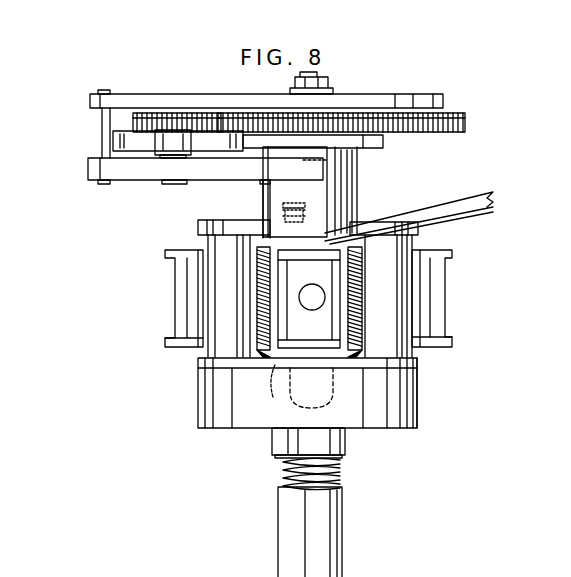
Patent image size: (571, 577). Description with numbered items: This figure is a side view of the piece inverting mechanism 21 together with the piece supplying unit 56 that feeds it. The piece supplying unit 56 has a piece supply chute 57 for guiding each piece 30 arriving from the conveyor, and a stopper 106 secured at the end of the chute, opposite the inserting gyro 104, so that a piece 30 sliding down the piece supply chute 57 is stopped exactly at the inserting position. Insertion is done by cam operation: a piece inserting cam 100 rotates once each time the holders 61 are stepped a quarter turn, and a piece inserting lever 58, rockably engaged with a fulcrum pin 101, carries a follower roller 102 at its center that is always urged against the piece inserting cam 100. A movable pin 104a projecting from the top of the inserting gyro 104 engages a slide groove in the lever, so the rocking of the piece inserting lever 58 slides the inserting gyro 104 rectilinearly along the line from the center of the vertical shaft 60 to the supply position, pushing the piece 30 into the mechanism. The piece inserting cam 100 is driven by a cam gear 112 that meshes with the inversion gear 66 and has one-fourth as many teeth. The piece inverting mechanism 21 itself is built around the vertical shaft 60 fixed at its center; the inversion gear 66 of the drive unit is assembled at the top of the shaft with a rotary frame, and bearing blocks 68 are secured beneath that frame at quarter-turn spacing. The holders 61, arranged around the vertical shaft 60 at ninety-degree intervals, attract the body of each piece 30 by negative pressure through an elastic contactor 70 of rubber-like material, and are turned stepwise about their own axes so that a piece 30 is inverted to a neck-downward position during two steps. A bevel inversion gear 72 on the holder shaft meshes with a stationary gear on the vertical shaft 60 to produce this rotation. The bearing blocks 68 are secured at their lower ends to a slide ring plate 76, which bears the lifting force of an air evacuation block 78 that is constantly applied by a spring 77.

The piece inverting mechanism 21 is at (413, 93).
The piece 30 is at (337, 388).
The piece supplying unit 56 is at (86, 100).
The piece supply chute 57 is at (450, 200).
The piece inserting lever 58 is at (130, 173).
The vertical shaft 60 is at (333, 525).
The holder 61 is at (173, 350).
The inversion gear 66 is at (466, 121).
The bearing block 68 is at (215, 247).
The contactor 70 is at (173, 300).
The bevel inversion gear 72 is at (365, 343).
The slide ring plate 76 is at (417, 363).
The spring 77 is at (340, 481).
The air evacuation block 78 is at (419, 410).
The piece inserting cam 100 is at (115, 141).
The fulcrum pin 101 is at (102, 128).
The follower roller 102 is at (203, 137).
The inserting gyro 104 is at (322, 188).
The movable pin 104a is at (327, 161).
The stopper 106 is at (263, 212).
The cam gear 112 is at (180, 84).